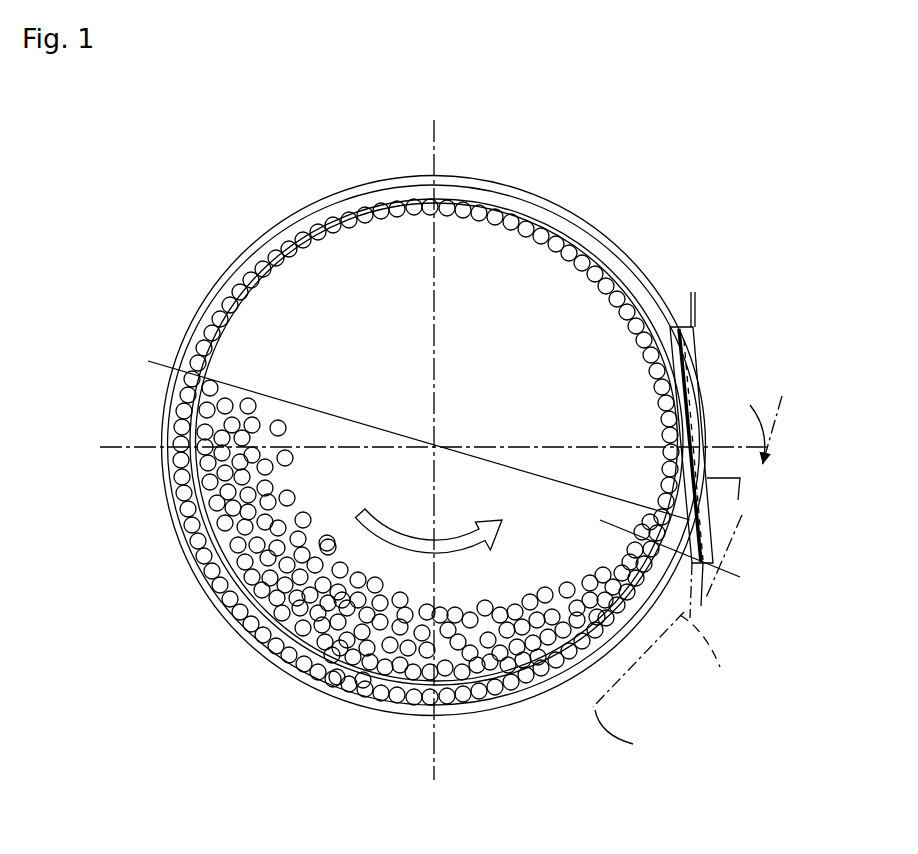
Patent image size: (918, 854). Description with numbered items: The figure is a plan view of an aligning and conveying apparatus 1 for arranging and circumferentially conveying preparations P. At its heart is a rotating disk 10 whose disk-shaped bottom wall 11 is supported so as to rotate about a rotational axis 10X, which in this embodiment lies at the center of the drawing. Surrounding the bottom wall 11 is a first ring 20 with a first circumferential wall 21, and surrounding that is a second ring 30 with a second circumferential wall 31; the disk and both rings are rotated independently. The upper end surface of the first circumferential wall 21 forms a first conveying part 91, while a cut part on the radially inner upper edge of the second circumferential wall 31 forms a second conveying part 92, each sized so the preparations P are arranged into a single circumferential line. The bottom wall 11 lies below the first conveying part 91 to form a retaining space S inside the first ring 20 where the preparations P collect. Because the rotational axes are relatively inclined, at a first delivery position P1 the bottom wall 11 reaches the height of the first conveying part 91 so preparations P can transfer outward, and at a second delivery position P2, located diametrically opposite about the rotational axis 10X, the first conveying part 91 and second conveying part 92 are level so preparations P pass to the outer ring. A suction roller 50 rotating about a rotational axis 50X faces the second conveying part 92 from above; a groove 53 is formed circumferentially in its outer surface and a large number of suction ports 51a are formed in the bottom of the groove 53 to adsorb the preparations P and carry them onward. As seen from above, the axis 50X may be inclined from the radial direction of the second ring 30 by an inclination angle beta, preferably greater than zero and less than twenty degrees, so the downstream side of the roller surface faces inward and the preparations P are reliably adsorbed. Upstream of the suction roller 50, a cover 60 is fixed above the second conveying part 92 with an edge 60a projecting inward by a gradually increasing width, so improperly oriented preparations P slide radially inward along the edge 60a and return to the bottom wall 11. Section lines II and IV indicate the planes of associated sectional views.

The aligning and conveying apparatus 1 is at (236, 168).
The rotating disk 10 is at (370, 300).
The bottom wall 11 is at (350, 318).
The first ring 20 is at (297, 669).
The first circumferential wall 21 is at (270, 626).
The second ring 30 is at (228, 236).
The second circumferential wall 31 is at (221, 284).
The suction roller 50 is at (725, 429).
The suction ports 51a is at (700, 532).
The groove 53 is at (680, 326).
The cover 60 is at (702, 637).
The edge 60a is at (622, 618).
The first conveying part 91 is at (575, 249).
The second conveying part 92 is at (426, 452).
The preparations P is at (290, 497).
The first delivery position P1 is at (651, 507).
The second delivery position P2 is at (219, 378).
The retaining space S is at (292, 322).
The rotational axis 10X is at (437, 444).
The rotational axis of the suction roller 50X is at (778, 422).
The section line II is at (150, 358).
The section line IV is at (625, 509).
The inclination angle beta is at (757, 433).